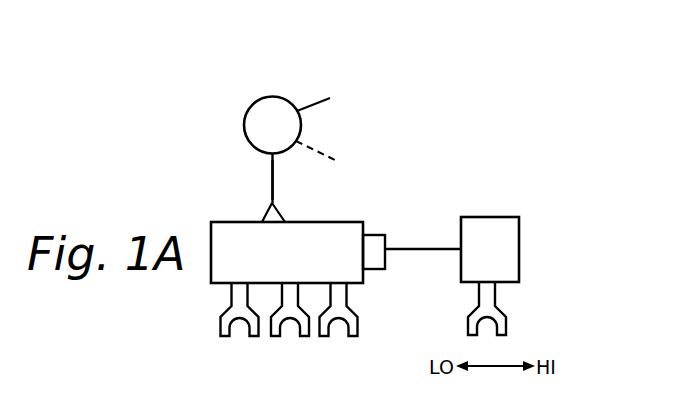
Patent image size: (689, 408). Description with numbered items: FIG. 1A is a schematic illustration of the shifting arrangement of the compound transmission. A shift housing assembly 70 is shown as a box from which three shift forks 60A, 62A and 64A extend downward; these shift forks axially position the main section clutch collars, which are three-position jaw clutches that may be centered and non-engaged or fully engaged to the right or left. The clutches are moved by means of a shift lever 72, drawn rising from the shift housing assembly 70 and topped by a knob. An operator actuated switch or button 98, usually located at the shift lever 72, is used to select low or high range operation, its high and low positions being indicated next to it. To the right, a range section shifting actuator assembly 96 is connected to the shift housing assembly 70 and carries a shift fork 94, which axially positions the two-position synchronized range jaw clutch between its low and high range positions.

The shift housing assembly 70 is at (236, 259).
The shift lever 72 is at (270, 166).
The operator actuated switch or button 98 is at (318, 98).
The shift fork 60A is at (226, 312).
The shift fork 62A is at (302, 309).
The shift fork 64A is at (346, 307).
The range section shifting actuator assembly 96 is at (497, 226).
The shift fork 94 is at (496, 302).